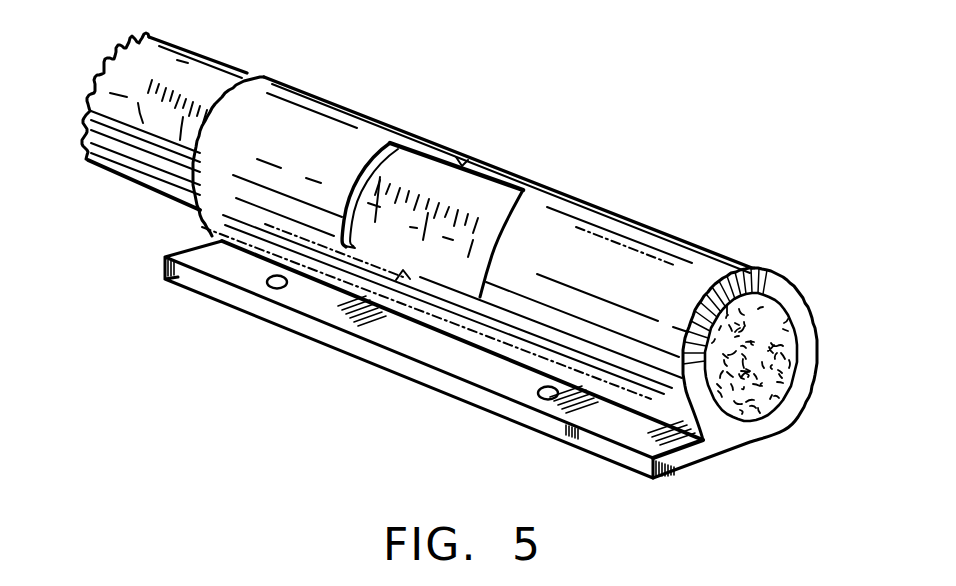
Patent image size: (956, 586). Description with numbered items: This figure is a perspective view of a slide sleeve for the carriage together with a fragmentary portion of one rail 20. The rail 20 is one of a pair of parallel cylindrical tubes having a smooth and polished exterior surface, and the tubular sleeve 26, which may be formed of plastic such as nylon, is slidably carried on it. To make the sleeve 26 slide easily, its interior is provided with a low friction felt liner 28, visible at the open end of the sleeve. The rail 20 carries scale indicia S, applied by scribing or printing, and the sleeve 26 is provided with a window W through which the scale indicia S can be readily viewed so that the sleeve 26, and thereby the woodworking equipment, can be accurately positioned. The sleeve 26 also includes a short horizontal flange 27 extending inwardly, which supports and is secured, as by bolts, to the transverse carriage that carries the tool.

The scale indicia S is at (204, 118).
The window W is at (487, 180).
The rail 20 is at (125, 143).
The tubular sleeve 26 is at (711, 270).
The horizontal flange 27 is at (415, 338).
The felt liner 28 is at (777, 372).